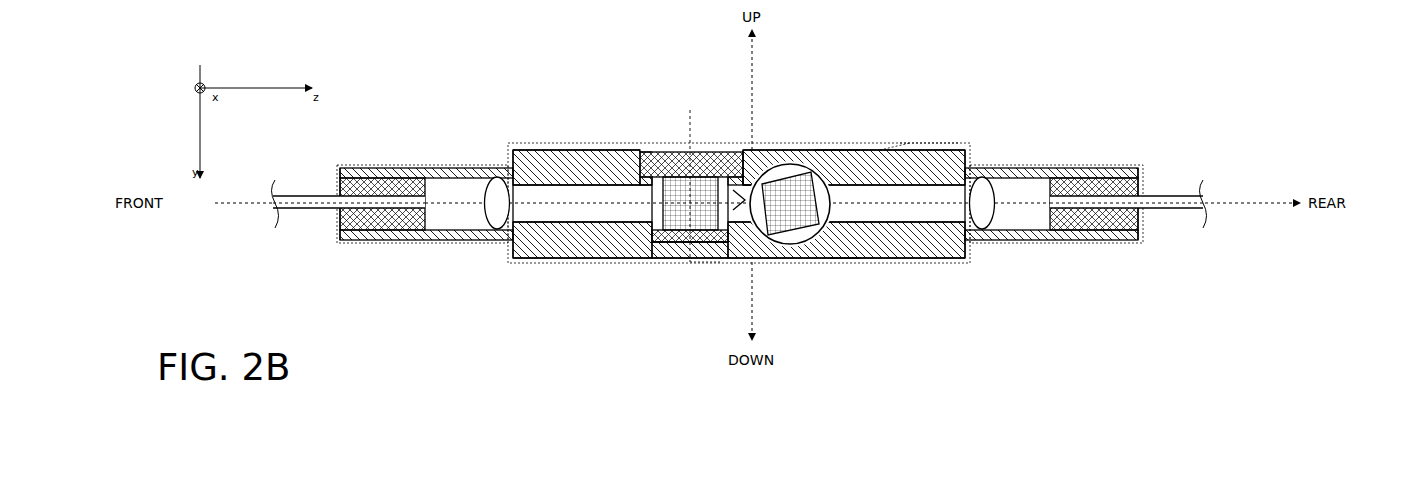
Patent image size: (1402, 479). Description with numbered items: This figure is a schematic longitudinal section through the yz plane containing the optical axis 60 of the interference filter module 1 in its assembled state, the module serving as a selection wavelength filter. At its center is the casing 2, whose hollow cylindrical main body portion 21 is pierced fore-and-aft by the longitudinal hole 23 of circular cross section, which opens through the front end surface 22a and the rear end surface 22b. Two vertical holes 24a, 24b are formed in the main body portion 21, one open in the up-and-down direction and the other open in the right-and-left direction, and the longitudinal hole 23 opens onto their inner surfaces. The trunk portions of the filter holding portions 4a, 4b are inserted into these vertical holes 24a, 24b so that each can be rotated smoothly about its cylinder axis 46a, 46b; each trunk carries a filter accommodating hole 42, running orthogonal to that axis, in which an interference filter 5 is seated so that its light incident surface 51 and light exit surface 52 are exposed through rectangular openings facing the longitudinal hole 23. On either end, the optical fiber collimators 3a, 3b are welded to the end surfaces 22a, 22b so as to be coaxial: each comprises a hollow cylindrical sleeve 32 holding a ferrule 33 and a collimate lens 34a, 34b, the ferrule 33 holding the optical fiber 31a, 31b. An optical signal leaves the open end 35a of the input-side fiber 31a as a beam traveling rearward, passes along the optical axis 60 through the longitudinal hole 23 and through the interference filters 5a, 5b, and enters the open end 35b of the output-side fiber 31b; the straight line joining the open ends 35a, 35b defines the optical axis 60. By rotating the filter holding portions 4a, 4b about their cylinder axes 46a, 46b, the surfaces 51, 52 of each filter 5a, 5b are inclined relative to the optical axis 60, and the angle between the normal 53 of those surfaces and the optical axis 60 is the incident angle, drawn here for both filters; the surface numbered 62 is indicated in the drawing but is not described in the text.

The interference filter module 1 is at (507, 70).
The casing 2 is at (565, 150).
The main body portion 21 is at (920, 258).
The front end surface 22a is at (512, 256).
The rear end surface 22b is at (968, 155).
The longitudinal hole 23 is at (597, 192).
The vertical hole 24a is at (660, 262).
The vertical hole 24b is at (790, 259).
The optical fiber collimator 3a is at (470, 244).
The optical fiber collimator 3b is at (1062, 244).
The optical fiber 31a is at (305, 210).
The optical fiber 31b is at (1157, 210).
The sleeve 32 is at (395, 241).
The ferrule 33 is at (400, 168).
The collimate lens 34a is at (497, 178).
The collimate lens 34b is at (985, 232).
The open end 35a is at (428, 200).
The open end 35b is at (1040, 211).
The filter holding portion 4a is at (712, 150).
The filter holding portion 4b is at (795, 165).
The filter accommodating hole 42 is at (650, 163).
The cylinder axis 46a is at (690, 300).
The cylinder axis 46b is at (814, 246).
The interference filter 5 is at (740, 262).
The interference filter 5a is at (716, 261).
The interference filter 5b is at (778, 173).
The light incident surface 51 is at (656, 262).
The light exit surface 52 is at (742, 160).
The normal 53 is at (836, 150).
The optical axis 60 is at (928, 142).
The lower surface 62 is at (845, 259).